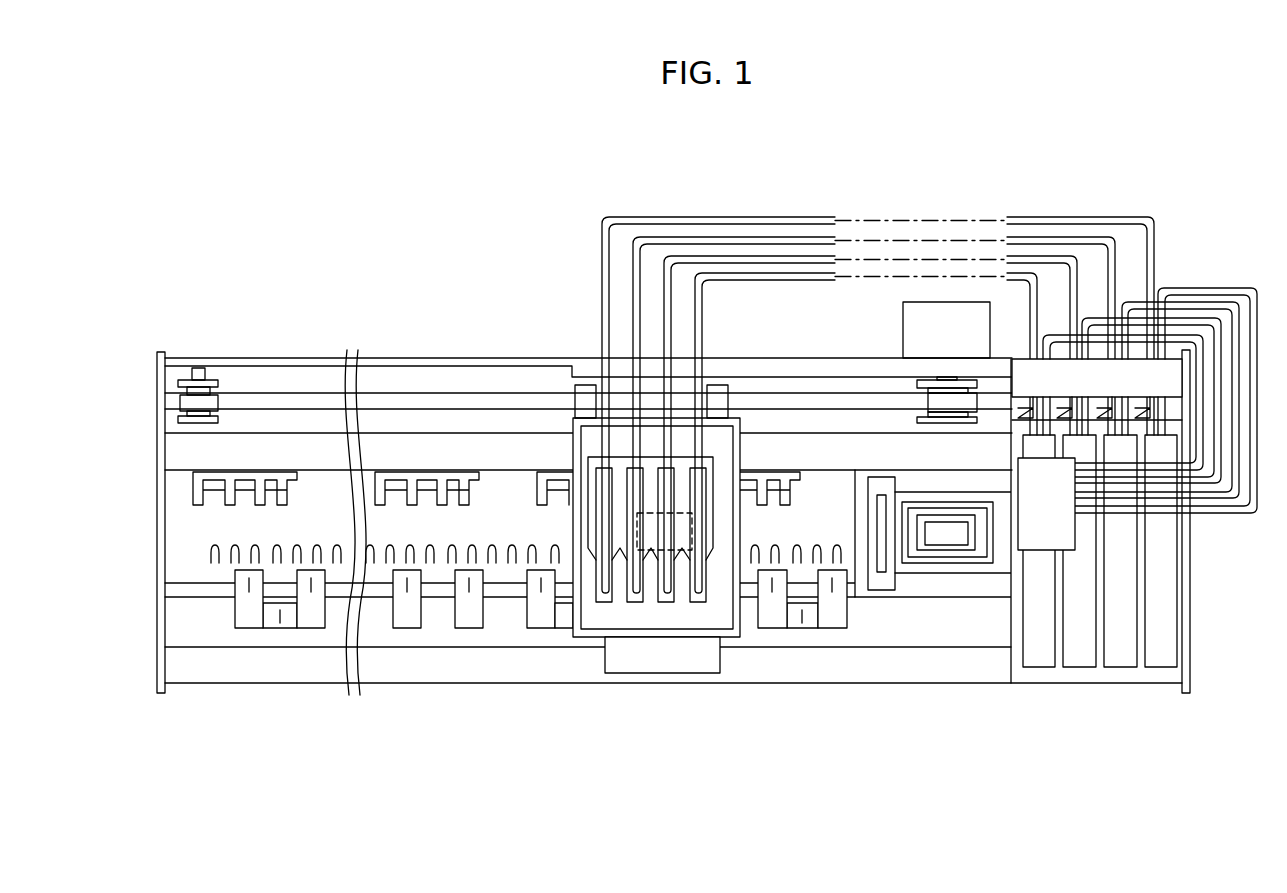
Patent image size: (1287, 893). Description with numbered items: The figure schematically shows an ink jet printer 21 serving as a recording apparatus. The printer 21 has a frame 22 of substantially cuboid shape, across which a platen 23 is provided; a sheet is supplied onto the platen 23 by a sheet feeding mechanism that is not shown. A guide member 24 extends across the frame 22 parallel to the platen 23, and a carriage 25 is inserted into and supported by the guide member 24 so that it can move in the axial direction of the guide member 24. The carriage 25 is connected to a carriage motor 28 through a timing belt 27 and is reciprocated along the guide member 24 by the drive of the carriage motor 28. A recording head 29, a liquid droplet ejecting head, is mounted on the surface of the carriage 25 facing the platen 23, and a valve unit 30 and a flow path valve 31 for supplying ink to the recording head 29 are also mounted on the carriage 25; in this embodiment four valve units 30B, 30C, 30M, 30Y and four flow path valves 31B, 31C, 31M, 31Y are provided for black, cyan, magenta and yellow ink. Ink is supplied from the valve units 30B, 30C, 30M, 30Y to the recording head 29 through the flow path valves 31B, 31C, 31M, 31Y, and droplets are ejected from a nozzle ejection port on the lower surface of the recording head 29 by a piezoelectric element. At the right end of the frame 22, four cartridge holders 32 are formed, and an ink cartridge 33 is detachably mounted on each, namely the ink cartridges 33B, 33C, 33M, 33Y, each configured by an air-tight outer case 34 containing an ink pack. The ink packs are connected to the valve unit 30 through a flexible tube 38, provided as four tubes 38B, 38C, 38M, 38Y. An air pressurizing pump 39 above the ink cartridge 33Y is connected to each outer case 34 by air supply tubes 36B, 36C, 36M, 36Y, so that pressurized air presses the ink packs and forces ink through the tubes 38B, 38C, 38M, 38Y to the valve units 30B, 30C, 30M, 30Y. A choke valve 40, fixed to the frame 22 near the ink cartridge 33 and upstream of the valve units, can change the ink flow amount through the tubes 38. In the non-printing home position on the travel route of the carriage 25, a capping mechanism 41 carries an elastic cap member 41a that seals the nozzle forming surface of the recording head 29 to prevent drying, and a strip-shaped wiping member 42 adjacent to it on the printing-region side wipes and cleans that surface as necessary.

The printer 21 is at (1113, 163).
The frame 22 is at (240, 357).
The platen 23 is at (175, 569).
The guide member 24 is at (175, 451).
The carriage 25 is at (572, 448).
The timing belt 27 is at (315, 392).
The carriage motor 28 is at (903, 328).
The recording head 29 is at (694, 527).
The valve unit 30 is at (652, 621).
The valve unit 30B is at (602, 606).
The valve unit 30C is at (637, 606).
The valve unit 30M is at (668, 605).
The valve unit 30Y is at (720, 602).
The flow path valve 31 is at (541, 431).
The flow path valve 31B is at (596, 458).
The flow path valve 31C is at (629, 460).
The flow path valve 31M is at (659, 460).
The flow path valve 31Y is at (690, 460).
The cartridge holder 32 is at (1157, 593).
The ink cartridge 33 is at (1094, 609).
The ink cartridge 33Y is at (1038, 668).
The ink cartridge 33M is at (1081, 668).
The ink cartridge 33C is at (1121, 668).
The ink cartridge 33B is at (1167, 590).
The outer case 34 is at (1038, 625).
The air supply tube 36B is at (1180, 287).
The air supply tube 36C is at (1226, 301).
The air supply tube 36M is at (1230, 505).
The air supply tube 36Y is at (1166, 468).
The tube 38 is at (878, 289).
The tube 38B is at (660, 216).
The tube 38C is at (706, 236).
The tube 38M is at (754, 255).
The tube 38Y is at (866, 308).
The air pressurizing pump 39 is at (1018, 461).
The choke valve 40 is at (1023, 364).
The capping mechanism 41 is at (947, 538).
The cap member 41a is at (930, 517).
The wiping member 42 is at (880, 584).